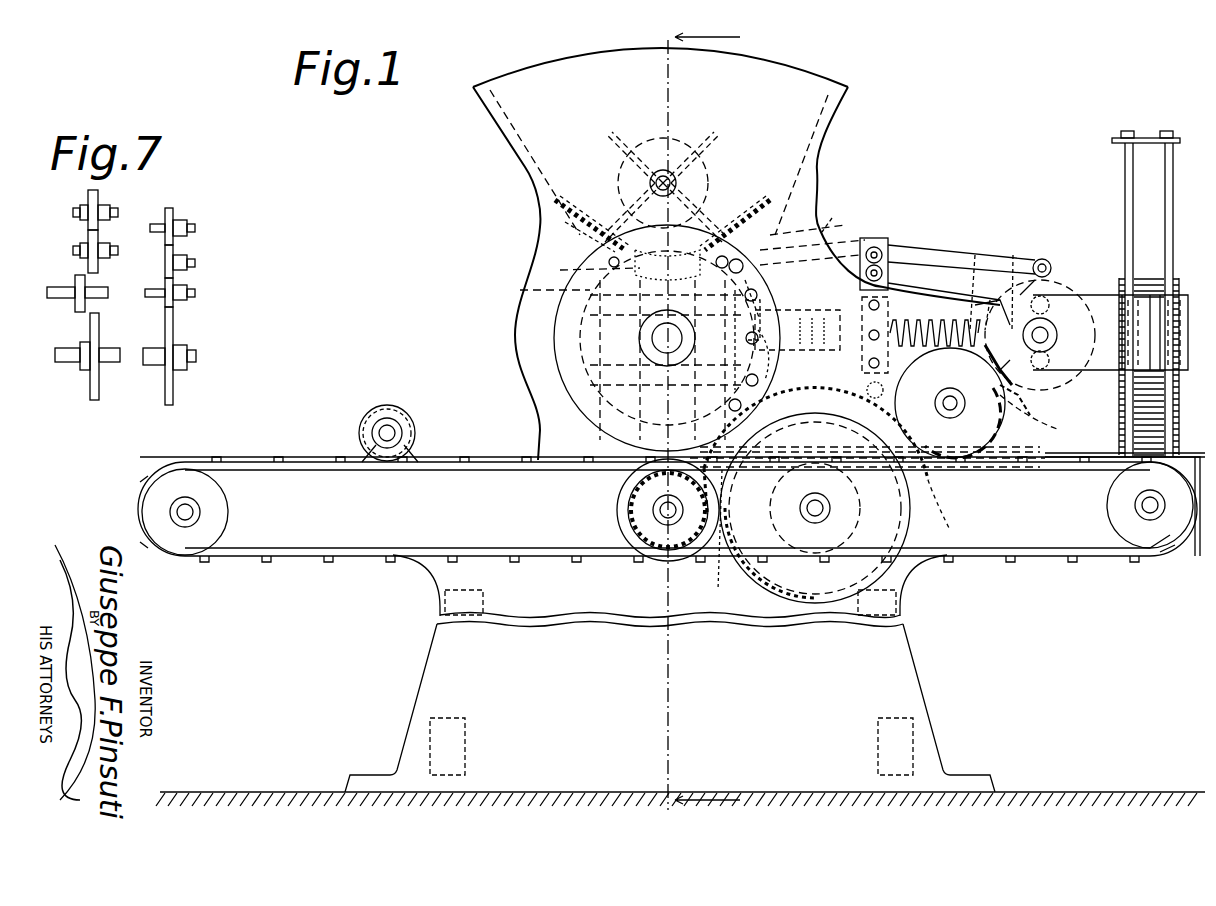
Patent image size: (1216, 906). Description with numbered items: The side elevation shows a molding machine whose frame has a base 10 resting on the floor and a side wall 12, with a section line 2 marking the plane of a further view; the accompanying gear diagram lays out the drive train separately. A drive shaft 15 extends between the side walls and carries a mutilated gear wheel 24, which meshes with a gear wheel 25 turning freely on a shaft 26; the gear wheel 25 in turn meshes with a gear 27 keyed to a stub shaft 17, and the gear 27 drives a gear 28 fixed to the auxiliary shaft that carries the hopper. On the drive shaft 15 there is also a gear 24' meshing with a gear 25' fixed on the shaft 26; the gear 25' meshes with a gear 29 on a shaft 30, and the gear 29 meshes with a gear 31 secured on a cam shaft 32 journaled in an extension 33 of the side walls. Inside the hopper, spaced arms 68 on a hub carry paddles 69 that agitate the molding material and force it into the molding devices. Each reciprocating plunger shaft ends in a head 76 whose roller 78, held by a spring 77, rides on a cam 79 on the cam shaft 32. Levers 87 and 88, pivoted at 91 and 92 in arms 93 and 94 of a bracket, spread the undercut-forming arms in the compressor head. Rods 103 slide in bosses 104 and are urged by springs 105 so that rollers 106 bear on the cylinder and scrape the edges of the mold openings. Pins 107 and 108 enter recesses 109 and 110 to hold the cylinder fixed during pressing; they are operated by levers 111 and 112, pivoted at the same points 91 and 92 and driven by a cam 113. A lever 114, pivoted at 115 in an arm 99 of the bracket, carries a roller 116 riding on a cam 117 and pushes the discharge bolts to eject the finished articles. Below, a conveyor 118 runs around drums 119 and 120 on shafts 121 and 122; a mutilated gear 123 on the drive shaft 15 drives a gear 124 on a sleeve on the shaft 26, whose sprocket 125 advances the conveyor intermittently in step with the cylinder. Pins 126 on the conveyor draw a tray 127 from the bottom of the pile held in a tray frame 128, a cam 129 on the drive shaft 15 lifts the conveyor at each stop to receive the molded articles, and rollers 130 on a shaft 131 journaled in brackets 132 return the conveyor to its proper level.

In FIG. 1, the section line 2 is at (691, 426).
In FIG. 1, the base 10 is at (372, 780).
In FIG. 1, the side wall 12 is at (670, 673).
In FIG. 7, the drive shaft 15 is at (66, 356).
In FIG. 1, the drive shaft 15 is at (652, 508).
In FIG. 1, the stub shaft 17 is at (655, 338).
In FIG. 7, the mutilated gear wheel 24 is at (96, 372).
In FIG. 1, the mutilated gear wheel 24 is at (664, 533).
In FIG. 7, the gear 24' is at (177, 363).
In FIG. 7, the gear wheel 25 is at (61, 300).
In FIG. 1, the gear wheel 25 is at (699, 531).
In FIG. 7, the gear 25' is at (183, 300).
In FIG. 1, the gear 25' is at (945, 500).
In FIG. 7, the shaft 26 is at (60, 289).
In FIG. 1, the shaft 26 is at (815, 516).
In FIG. 7, the gear wheel 27 is at (108, 232).
In FIG. 1, the gear wheel 27 is at (575, 420).
In FIG. 7, the gear 28 is at (93, 192).
In FIG. 7, the gear 29 is at (173, 256).
In FIG. 1, the gear 29 is at (1020, 425).
In FIG. 1, the shaft 30 is at (945, 410).
In FIG. 7, the gear 31 is at (169, 210).
In FIG. 1, the gear 31 is at (1040, 405).
In FIG. 7, the cam shaft 32 is at (187, 230).
In FIG. 1, the cam shaft 32 is at (1048, 335).
In FIG. 1, the extension 33 is at (1105, 292).
In FIG. 1, the arms 68 is at (680, 183).
In FIG. 1, the blade or paddle 69 is at (640, 160).
In FIG. 1, the head 76 is at (893, 316).
In FIG. 1, the spring 77 is at (930, 348).
In FIG. 1, the roller 78 is at (992, 301).
In FIG. 1, the cam 79 is at (1014, 282).
In FIG. 1, the lever 87 is at (797, 321).
In FIG. 1, the lever 88 is at (771, 340).
In FIG. 1, the pivot 91 is at (870, 238).
In FIG. 1, the pivot 92 is at (867, 441).
In FIG. 1, the arm 93 is at (950, 290).
In FIG. 1, the arm 94 is at (858, 340).
In FIG. 1, the arm 99 is at (900, 249).
In FIG. 1, the rods 103 is at (560, 205).
In FIG. 1, the bosses 104 is at (565, 224).
In FIG. 1, the springs 105 is at (608, 260).
In FIG. 1, the rollers 106 is at (580, 272).
In FIG. 1, the pin 107 is at (728, 270).
In FIG. 1, the pin 108 is at (745, 392).
In FIG. 1, the recess 109 is at (745, 320).
In FIG. 1, the recess 110 is at (735, 355).
In FIG. 1, the lever 111 is at (790, 240).
In FIG. 1, the lever 112 is at (790, 420).
In FIG. 1, the cam 113 is at (1005, 365).
In FIG. 1, the lever 114 is at (838, 205).
In FIG. 1, the pivot 115 is at (880, 248).
In FIG. 1, the roller 116 is at (1045, 258).
In FIG. 1, the cam 117 is at (1048, 282).
In FIG. 1, the conveyor 118 is at (1030, 560).
In FIG. 1, the drum 119 is at (205, 498).
In FIG. 1, the drum 120 is at (1110, 497).
In FIG. 1, the shaft 121 is at (150, 505).
In FIG. 1, the shaft 122 is at (1140, 515).
In FIG. 1, the mutilated gear 123 is at (718, 590).
In FIG. 1, the gear 124 is at (745, 578).
In FIG. 1, the sprocket 125 is at (865, 510).
In FIG. 1, the pins 126 is at (1150, 565).
In FIG. 1, the tray 127 is at (1080, 445).
In FIG. 1, the tray frame 128 is at (1165, 190).
In FIG. 1, the cam 129 is at (625, 488).
In FIG. 1, the rollers 130 is at (412, 425).
In FIG. 1, the shaft 131 is at (387, 425).
In FIG. 1, the brackets 132 is at (360, 440).